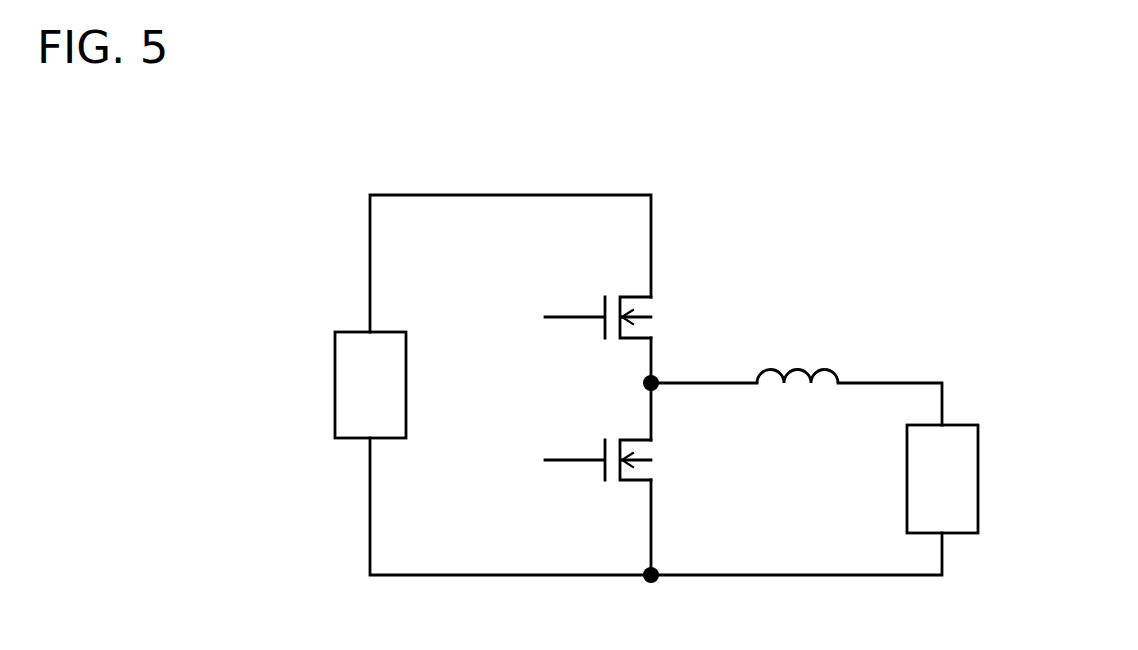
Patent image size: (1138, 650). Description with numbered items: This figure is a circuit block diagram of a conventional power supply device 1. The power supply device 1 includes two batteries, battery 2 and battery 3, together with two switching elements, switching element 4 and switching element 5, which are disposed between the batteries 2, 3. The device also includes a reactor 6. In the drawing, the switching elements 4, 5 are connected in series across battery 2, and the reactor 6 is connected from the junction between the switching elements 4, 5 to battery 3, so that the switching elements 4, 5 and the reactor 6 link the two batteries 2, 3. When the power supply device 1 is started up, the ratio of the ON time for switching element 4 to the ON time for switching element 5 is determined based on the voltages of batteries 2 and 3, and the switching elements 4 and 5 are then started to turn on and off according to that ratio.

The power supply device 1 is at (726, 109).
The battery 2 is at (335, 368).
The battery 3 is at (984, 470).
The switching element 4 is at (665, 295).
The switching element 5 is at (602, 503).
The reactor 6 is at (828, 360).